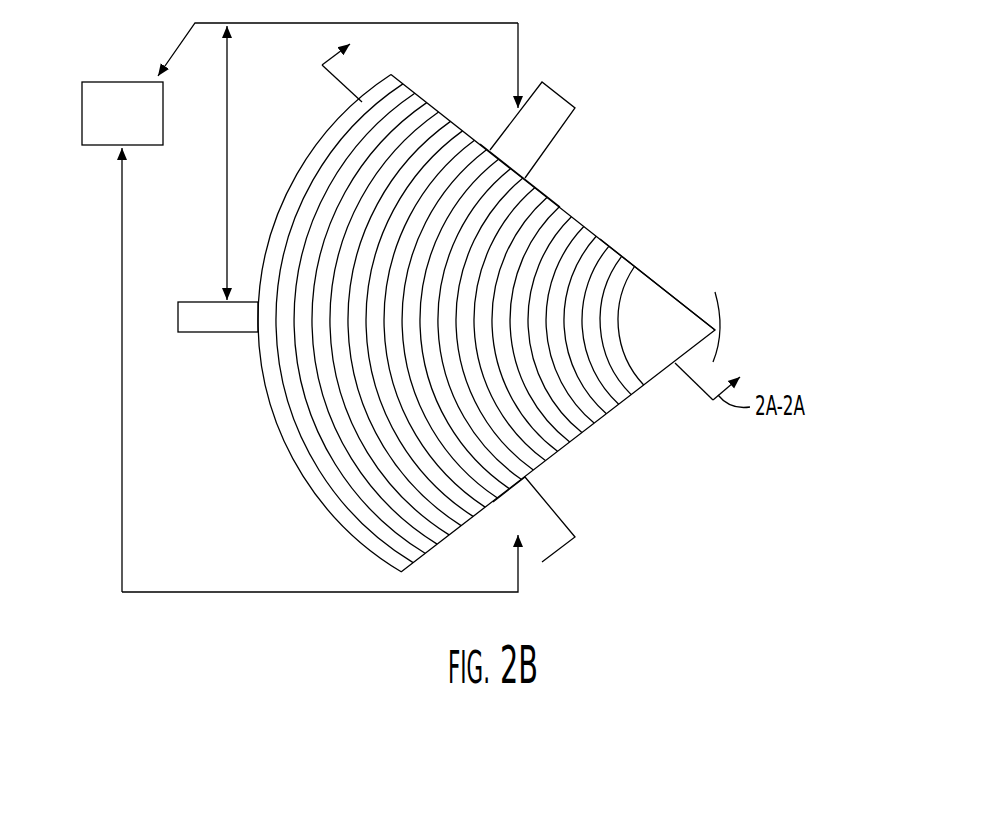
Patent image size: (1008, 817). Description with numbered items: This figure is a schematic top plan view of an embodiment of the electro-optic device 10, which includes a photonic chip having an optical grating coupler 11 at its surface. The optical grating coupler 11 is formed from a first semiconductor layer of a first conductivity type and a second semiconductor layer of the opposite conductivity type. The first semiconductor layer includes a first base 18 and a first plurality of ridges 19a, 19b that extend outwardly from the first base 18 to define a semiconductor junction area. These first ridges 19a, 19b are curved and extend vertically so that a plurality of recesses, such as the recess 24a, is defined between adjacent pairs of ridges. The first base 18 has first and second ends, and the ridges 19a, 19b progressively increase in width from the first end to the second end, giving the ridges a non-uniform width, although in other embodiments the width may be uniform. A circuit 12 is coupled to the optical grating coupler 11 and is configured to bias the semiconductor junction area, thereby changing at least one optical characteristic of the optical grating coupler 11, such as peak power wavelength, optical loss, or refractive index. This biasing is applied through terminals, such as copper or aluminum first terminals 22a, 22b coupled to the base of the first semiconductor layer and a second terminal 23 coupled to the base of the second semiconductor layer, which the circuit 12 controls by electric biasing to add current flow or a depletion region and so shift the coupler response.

The electro-optic device 10 is at (774, 110).
The optical grating coupler 11 is at (669, 229).
The circuit 12 is at (133, 80).
The first base 18 is at (527, 177).
The first ridge 19a is at (637, 258).
The first ridge 19b is at (608, 240).
The first terminal 22a is at (559, 95).
The first terminal 22b is at (550, 504).
The second terminal 23 is at (210, 326).
The recess 24a is at (625, 245).